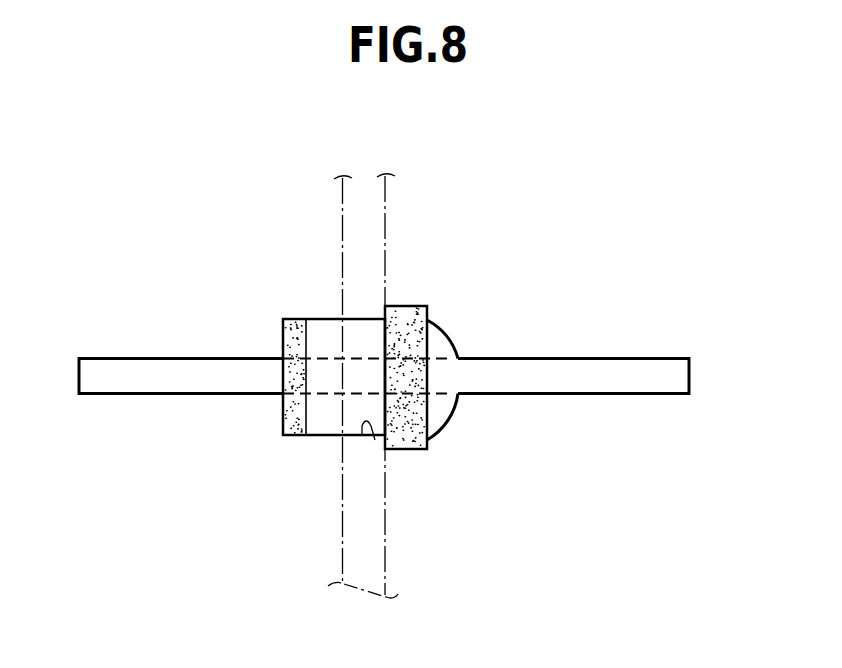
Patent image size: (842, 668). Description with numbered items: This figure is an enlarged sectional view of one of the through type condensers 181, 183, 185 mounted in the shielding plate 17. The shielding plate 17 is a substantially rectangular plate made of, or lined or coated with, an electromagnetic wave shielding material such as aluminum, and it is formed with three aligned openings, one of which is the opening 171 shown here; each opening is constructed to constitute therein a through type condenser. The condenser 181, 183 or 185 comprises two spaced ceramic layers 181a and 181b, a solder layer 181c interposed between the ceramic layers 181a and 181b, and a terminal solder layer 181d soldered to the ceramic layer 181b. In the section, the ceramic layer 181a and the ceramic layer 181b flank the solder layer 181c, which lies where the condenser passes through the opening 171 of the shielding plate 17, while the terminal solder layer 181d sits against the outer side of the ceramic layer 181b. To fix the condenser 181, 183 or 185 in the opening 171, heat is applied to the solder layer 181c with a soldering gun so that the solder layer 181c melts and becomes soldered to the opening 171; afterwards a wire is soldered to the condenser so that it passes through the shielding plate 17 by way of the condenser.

The shielding plate 17 is at (380, 203).
The through type condenser 181 is at (466, 353).
The through type condenser 183 is at (466, 353).
The through type condenser 185 is at (466, 353).
The ceramic layer 181a is at (292, 420).
The ceramic layer 181b is at (410, 450).
The solder layer 181c is at (358, 325).
The terminal solder layer 181d is at (442, 408).
The opening 171 is at (375, 440).